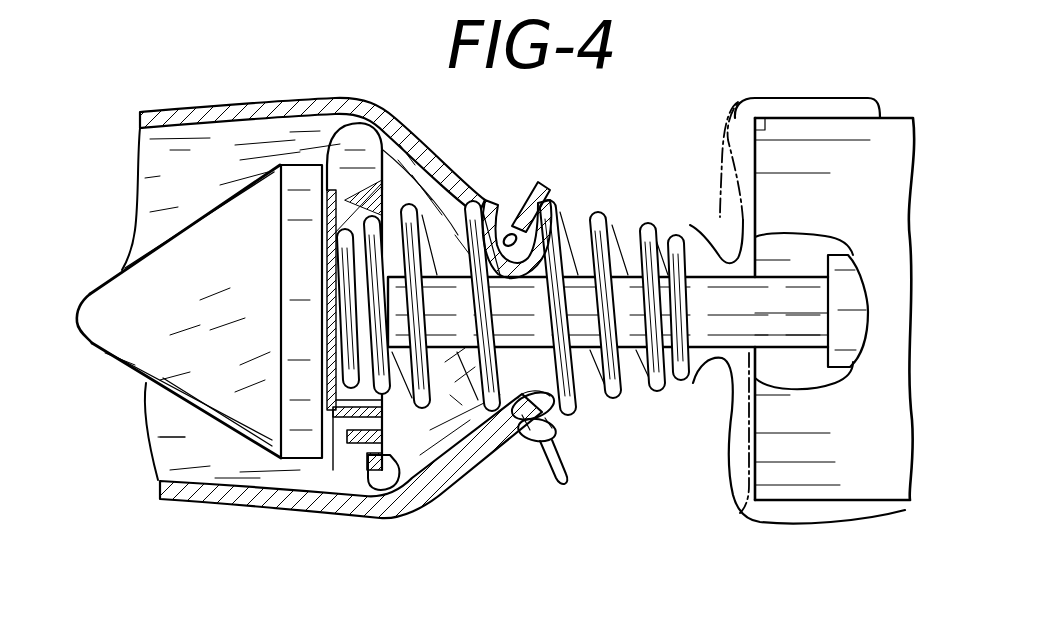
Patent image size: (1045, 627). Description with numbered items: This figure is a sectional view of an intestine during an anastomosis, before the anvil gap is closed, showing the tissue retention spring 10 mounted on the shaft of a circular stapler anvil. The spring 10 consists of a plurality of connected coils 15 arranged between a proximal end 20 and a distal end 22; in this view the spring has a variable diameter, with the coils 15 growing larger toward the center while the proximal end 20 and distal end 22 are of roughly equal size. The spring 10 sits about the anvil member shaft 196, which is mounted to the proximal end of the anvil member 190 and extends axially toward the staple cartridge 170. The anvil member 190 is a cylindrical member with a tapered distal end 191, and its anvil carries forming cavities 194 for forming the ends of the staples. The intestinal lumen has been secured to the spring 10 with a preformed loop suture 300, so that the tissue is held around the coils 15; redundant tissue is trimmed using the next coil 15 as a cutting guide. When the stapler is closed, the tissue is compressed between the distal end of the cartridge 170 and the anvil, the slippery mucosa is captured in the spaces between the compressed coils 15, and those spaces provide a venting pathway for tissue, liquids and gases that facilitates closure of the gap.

The tissue retention spring 10 is at (677, 90).
The coils 15 is at (607, 220).
The proximal end 20 is at (680, 230).
The distal end 22 is at (300, 368).
The staple cartridge 170 is at (834, 150).
The anvil member 190 is at (227, 380).
The tapered distal end 191 is at (75, 317).
The forming cavities 194 is at (415, 450).
The anvil member shaft 196 is at (713, 342).
The preformed loop suture 300 is at (507, 230).